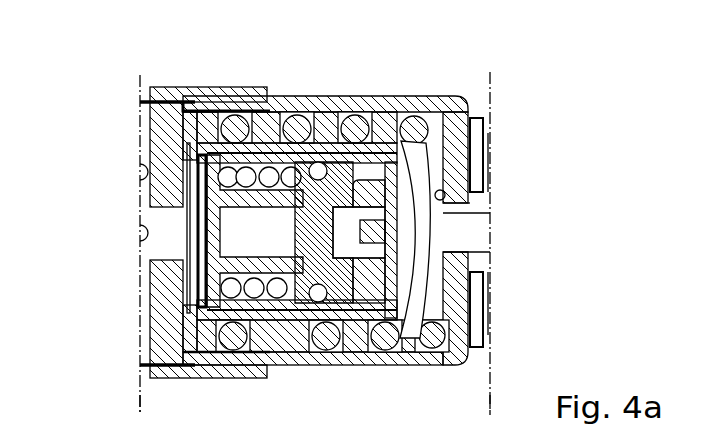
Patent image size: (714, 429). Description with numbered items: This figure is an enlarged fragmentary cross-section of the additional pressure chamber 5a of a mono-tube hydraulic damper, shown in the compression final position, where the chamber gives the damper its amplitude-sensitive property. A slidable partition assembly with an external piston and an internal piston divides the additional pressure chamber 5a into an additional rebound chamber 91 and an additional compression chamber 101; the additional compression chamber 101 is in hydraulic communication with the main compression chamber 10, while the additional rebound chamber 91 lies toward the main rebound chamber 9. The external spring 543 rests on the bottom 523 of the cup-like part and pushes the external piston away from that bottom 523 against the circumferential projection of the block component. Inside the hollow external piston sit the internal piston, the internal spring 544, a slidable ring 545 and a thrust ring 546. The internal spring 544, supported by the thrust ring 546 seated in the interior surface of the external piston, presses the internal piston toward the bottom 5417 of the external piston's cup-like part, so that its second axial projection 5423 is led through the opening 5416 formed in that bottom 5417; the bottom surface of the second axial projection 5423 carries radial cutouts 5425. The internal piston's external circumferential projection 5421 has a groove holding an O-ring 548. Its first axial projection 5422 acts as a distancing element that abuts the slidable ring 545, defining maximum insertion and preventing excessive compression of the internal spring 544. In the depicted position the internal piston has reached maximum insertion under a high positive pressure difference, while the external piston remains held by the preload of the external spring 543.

The additional pressure chamber 5a is at (459, 72).
The main rebound chamber 9 is at (127, 404).
The additional rebound chamber 91 is at (158, 245).
The main compression chamber 10 is at (508, 404).
The additional compression chamber 101 is at (466, 243).
The bottom of the cup-like part 523 is at (457, 135).
The external spring 543 is at (417, 133).
The internal spring 544 is at (192, 103).
The slidable ring 545 is at (200, 189).
The thrust ring 546 is at (198, 167).
The O-ring 548 is at (262, 86).
The opening 5416 is at (393, 235).
The bottom of the cup-like part 5417 is at (395, 172).
The external circumferential projection 5421 is at (358, 192).
The first axial projection 5422 is at (200, 258).
The second axial projection 5423 is at (357, 190).
The radial cutouts 5425 is at (370, 272).